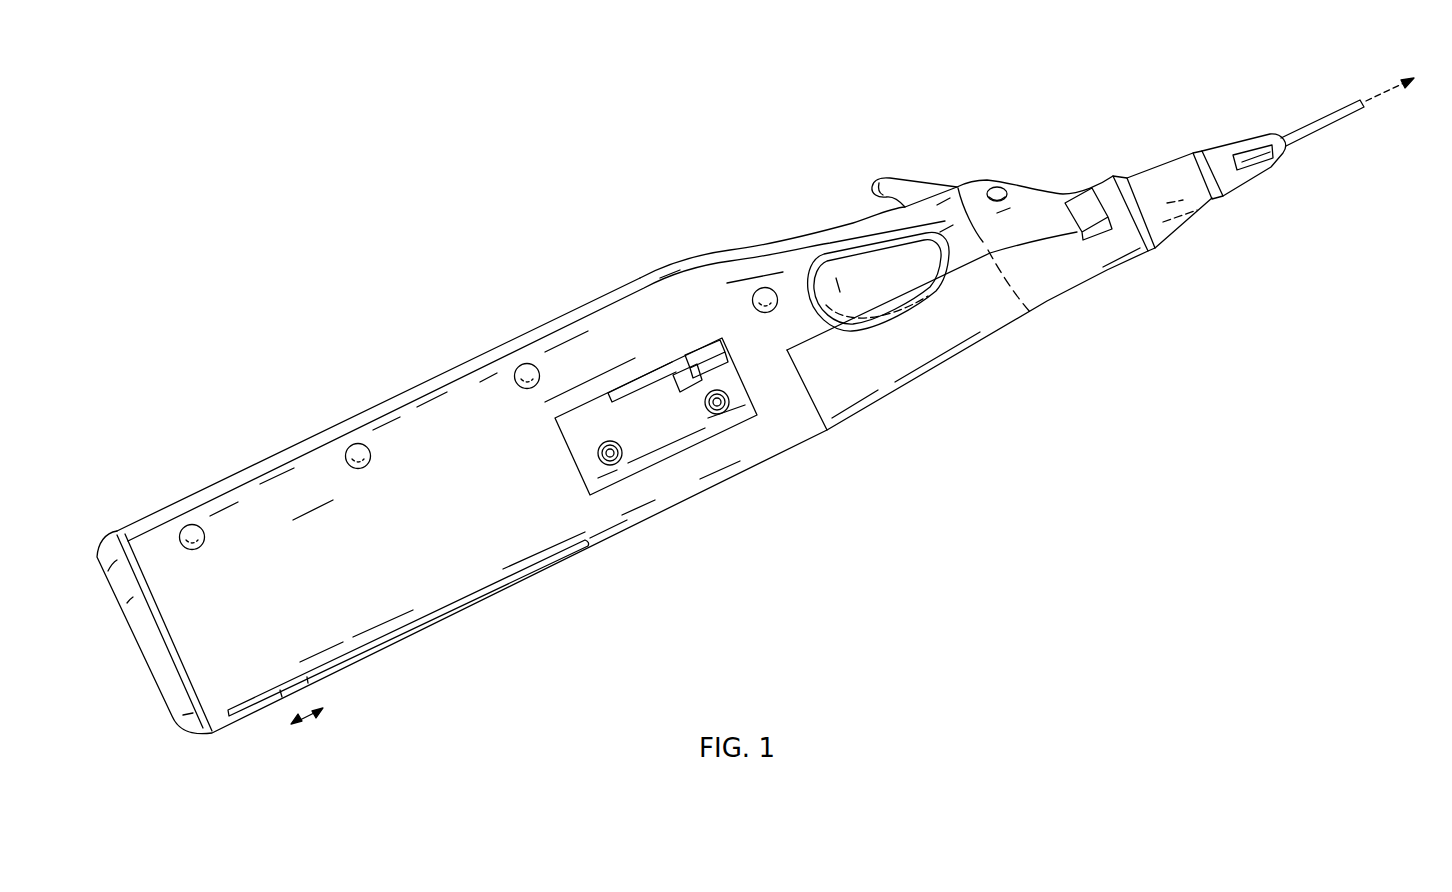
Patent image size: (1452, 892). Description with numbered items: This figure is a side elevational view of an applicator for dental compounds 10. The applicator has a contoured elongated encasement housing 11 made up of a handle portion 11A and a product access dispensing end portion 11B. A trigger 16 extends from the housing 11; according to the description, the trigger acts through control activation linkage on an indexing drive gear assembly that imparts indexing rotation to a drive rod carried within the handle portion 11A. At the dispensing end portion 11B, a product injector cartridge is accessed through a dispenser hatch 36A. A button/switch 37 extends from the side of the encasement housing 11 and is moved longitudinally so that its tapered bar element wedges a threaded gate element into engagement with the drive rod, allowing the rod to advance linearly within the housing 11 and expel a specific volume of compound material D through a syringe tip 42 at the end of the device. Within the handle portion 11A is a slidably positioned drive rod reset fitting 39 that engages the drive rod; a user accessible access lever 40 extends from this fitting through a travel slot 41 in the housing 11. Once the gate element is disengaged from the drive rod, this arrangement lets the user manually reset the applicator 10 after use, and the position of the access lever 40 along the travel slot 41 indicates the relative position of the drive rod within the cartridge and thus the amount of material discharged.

The applicator for dental compounds 10 is at (673, 222).
The contoured elongated encasement housing 11 is at (412, 380).
The handle portion 11A is at (237, 458).
The product access dispensing end portion 11B is at (1003, 167).
The trigger 16 is at (903, 167).
The dispenser hatch 36A is at (993, 332).
The button/switch 37 is at (680, 372).
The drive rod reset fitting 39 is at (285, 702).
The access lever 40 is at (292, 687).
The travel slot 41 is at (366, 650).
The syringe tip 42 is at (1258, 160).
The compound material D is at (1380, 97).